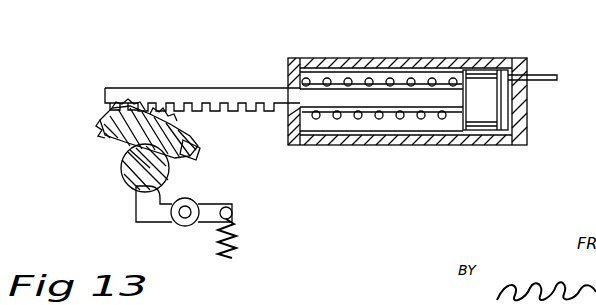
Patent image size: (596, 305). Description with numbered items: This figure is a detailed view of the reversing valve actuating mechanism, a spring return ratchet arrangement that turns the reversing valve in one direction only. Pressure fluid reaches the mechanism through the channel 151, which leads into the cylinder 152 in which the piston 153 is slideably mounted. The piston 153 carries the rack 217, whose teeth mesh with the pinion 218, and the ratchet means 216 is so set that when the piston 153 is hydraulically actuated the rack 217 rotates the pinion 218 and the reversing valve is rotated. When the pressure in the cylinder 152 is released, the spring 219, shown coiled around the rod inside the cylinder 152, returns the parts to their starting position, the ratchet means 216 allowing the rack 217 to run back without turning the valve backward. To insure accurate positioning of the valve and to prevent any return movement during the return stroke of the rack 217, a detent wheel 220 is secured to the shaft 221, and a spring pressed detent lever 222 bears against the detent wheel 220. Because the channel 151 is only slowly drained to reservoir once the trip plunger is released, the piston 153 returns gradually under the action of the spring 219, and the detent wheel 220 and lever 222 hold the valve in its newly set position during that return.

The channel 151 is at (546, 76).
The cylinder 152 is at (374, 64).
The piston 153 is at (480, 87).
The ratchet means 216 is at (196, 154).
The rack 217 is at (192, 78).
The pinion 218 is at (192, 144).
The spring 219 is at (428, 80).
The detent wheel 220 is at (120, 172).
The shaft 221 is at (128, 186).
The spring pressed detent lever 222 is at (206, 208).